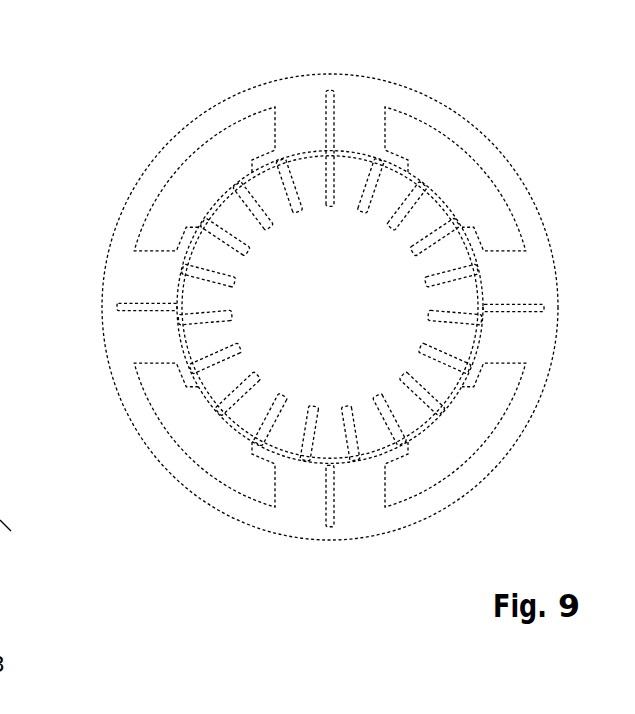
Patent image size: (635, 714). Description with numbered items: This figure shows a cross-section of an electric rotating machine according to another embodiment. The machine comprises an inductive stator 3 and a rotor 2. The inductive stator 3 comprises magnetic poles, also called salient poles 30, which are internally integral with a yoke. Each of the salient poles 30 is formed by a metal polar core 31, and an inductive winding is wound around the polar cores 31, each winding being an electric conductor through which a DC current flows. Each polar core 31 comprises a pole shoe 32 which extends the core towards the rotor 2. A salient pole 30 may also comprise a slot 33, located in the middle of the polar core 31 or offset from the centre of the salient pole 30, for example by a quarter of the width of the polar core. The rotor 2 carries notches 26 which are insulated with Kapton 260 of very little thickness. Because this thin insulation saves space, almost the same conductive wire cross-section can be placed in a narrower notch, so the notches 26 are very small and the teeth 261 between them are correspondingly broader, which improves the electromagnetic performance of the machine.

The rotor 2 is at (448, 393).
The inductive stator 3 is at (433, 102).
The notches 26 is at (485, 243).
The salient poles 30 is at (356, 100).
The polar core 31 is at (300, 98).
The pole shoe 32 is at (408, 165).
The slot 33 is at (115, 307).
The Kapton insulation 260 is at (264, 420).
The teeth 261 is at (223, 213).